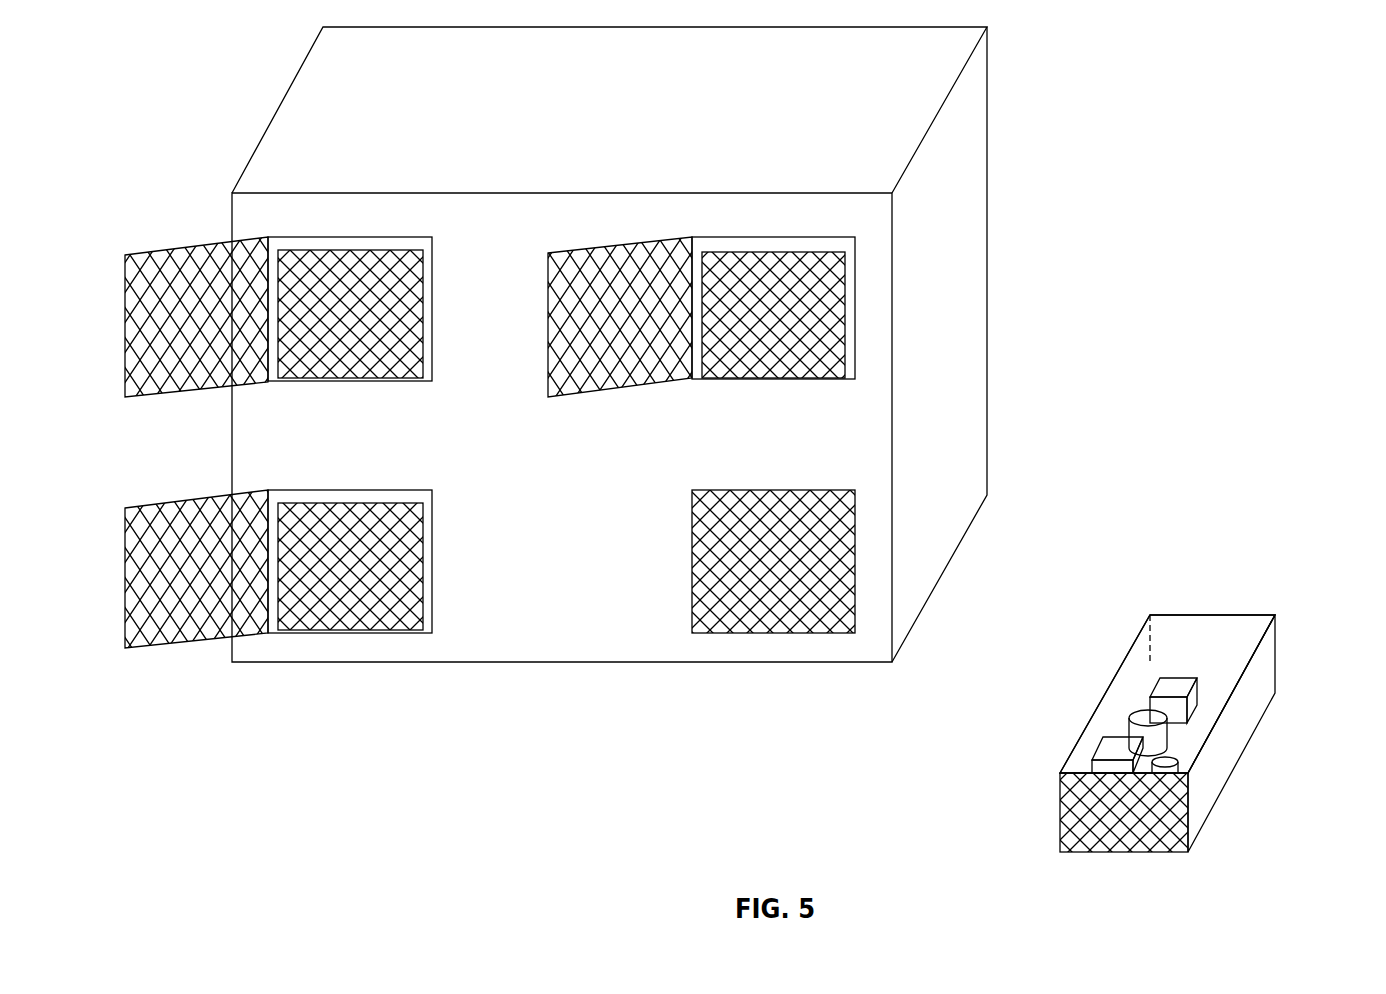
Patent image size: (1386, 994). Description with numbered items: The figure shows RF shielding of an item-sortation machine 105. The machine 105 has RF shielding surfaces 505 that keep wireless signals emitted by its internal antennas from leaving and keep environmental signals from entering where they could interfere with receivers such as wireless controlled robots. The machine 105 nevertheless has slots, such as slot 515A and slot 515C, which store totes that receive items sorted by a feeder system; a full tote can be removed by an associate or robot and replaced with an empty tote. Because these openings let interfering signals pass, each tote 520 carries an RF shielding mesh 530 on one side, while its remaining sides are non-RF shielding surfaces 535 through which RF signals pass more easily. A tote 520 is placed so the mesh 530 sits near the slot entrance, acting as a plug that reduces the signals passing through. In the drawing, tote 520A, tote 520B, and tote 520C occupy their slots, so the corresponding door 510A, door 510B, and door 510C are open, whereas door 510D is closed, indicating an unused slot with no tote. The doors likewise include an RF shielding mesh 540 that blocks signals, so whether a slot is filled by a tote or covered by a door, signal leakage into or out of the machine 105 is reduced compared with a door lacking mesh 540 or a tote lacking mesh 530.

The item-sortation machine 105 is at (1038, 163).
The RF shielding surfaces 505 is at (873, 182).
The door 510A is at (177, 392).
The door 510B is at (608, 389).
The door 510C is at (177, 643).
The door 510D is at (775, 490).
The slot 515A is at (432, 267).
The slot 515C is at (432, 508).
The tote 520 is at (1107, 697).
The tote 520A is at (423, 358).
The tote 520B is at (797, 252).
The tote 520C is at (423, 592).
The RF shielding mesh 530 is at (1060, 808).
The non-RF shielding surfaces 535 is at (1172, 630).
The RF shielding mesh 540 is at (145, 275).